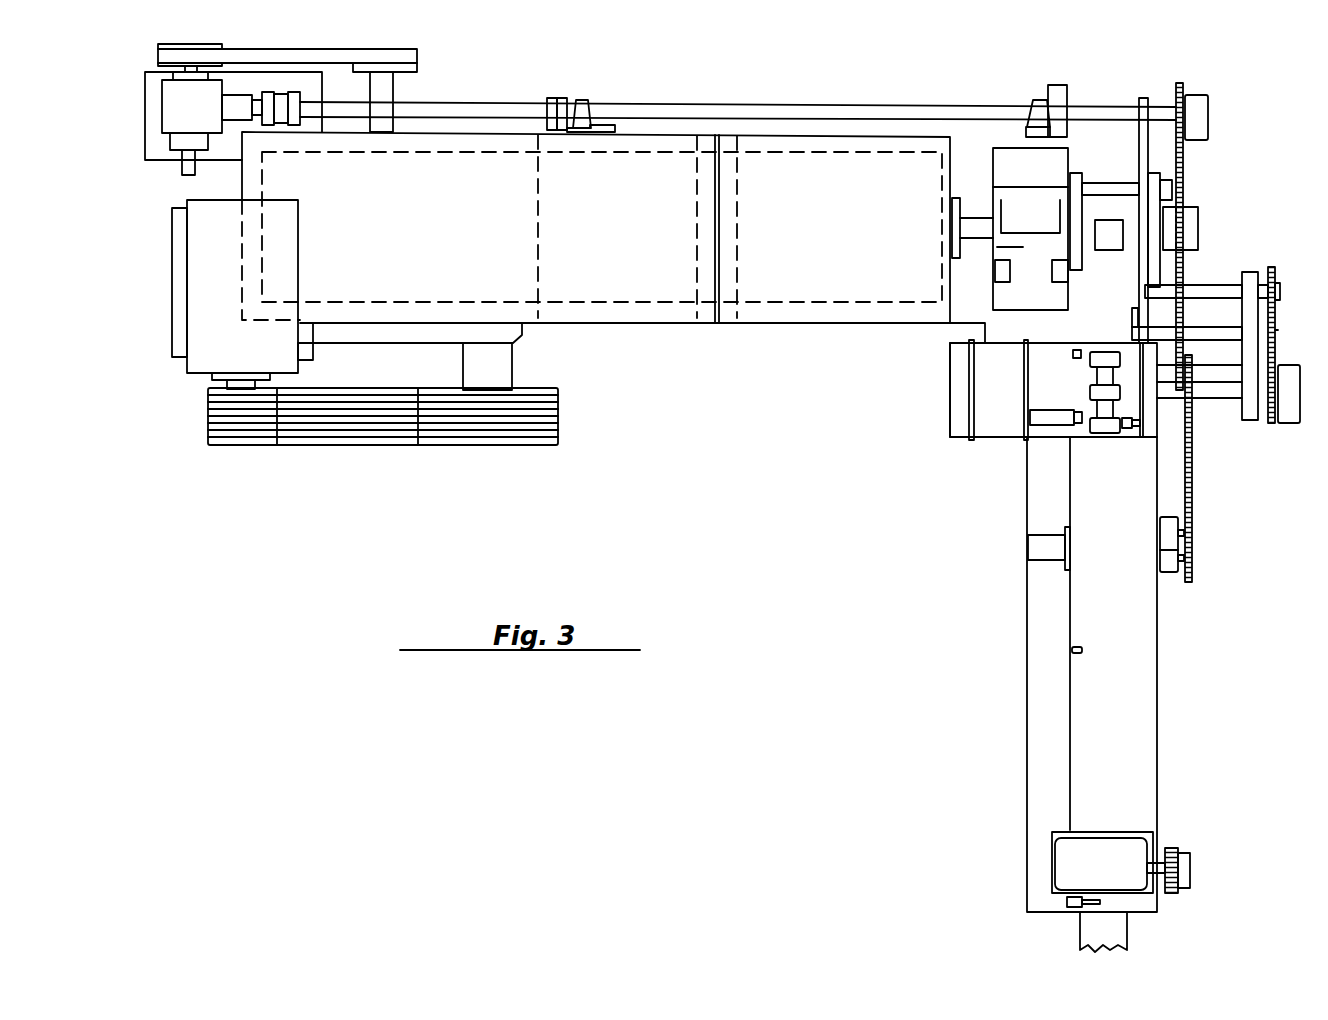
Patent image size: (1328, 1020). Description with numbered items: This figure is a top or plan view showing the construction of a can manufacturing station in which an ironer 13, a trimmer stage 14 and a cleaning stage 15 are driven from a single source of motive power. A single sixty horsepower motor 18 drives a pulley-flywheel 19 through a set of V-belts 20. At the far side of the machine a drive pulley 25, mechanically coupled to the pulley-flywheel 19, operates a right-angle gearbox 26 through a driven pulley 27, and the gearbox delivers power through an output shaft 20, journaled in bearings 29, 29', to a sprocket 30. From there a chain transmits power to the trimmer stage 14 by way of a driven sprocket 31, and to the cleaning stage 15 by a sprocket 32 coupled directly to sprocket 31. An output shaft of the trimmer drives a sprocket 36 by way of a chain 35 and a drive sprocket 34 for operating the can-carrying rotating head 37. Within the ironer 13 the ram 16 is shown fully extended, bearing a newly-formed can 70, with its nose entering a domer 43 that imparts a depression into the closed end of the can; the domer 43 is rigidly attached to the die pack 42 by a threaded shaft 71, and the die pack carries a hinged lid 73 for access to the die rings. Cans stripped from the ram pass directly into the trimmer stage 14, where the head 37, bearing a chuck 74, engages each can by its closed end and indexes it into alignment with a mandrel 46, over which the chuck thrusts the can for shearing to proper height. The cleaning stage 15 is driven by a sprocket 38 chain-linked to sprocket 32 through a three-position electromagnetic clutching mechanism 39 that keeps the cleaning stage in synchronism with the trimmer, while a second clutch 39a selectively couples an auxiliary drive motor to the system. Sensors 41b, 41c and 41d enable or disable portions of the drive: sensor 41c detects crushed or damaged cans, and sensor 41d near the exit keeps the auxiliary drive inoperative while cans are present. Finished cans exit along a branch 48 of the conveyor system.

The ironer 13 is at (642, 213).
The trimmer stage 14 is at (948, 378).
The cleaning stage 15 is at (1060, 628).
The ram 16 is at (1083, 230).
The motor 18 is at (187, 305).
The pulley-flywheel 19 is at (510, 447).
The V-belts 20 is at (684, 106).
The drive pulley 25 is at (417, 66).
The right-angle gearbox 26 is at (165, 110).
The driven pulley 27 is at (158, 46).
The bearing 29 is at (1069, 90).
The bearing 29' is at (595, 89).
The sprocket 30 is at (1178, 83).
The driven sprocket 31 is at (1183, 358).
The sprocket 32 is at (1192, 378).
The drive sprocket 34 is at (1272, 267).
The chain 35 is at (1276, 332).
The sprocket 36 is at (1272, 430).
The rotating head 37 is at (1128, 383).
The sprocket 38 is at (1195, 558).
The clutching mechanism 39 is at (955, 425).
The second clutch 39a is at (1188, 862).
The sensor 41b is at (1073, 354).
The sensor 41c is at (1072, 650).
The sensor 41d is at (1067, 902).
The die pack 42 is at (1020, 210).
The domer 43 is at (1200, 240).
The mandrel 46 is at (1036, 413).
The branch 48 is at (1113, 935).
The can 70 is at (1108, 222).
The threaded shaft 71 is at (1097, 186).
The hinged lid 73 is at (997, 247).
The chuck 74 is at (1138, 420).